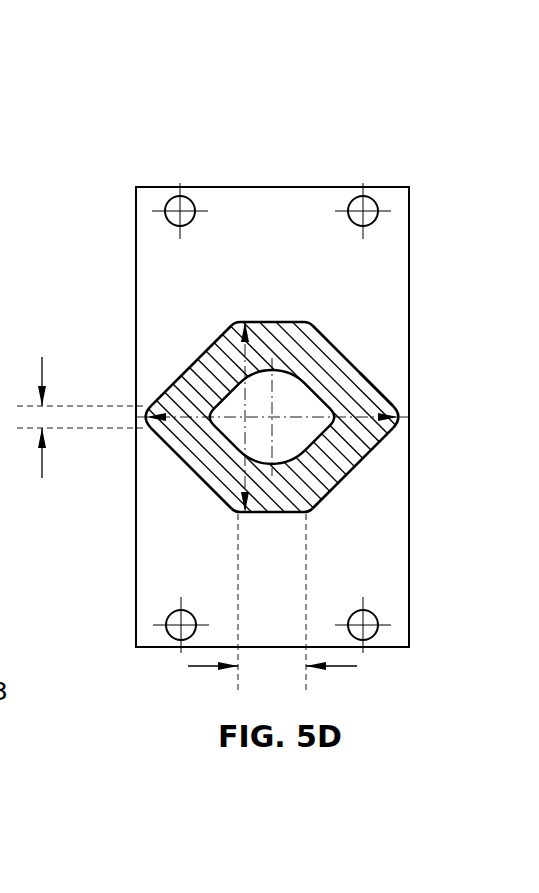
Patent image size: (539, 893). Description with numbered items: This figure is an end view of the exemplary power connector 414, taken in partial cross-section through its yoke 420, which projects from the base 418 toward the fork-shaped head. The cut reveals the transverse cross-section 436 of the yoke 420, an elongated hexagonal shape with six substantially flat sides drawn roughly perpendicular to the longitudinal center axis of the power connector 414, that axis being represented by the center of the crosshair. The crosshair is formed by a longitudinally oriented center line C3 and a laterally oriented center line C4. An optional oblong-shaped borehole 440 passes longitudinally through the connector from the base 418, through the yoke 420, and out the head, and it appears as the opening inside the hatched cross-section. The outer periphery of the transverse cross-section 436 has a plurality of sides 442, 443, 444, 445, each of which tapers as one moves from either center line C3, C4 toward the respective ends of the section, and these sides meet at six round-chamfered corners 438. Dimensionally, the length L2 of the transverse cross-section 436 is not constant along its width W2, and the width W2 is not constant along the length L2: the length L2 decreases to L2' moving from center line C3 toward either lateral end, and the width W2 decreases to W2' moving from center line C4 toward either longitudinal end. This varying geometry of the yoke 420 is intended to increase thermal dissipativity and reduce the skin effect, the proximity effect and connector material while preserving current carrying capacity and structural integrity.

The power connector 414 is at (160, 135).
The base 418 is at (136, 200).
The yoke 420 is at (175, 312).
The transverse cross-section 436 is at (312, 360).
The round-chamfered corners 438 is at (237, 320).
The oblong-shaped borehole 440 is at (352, 368).
The side 442 is at (167, 446).
The side 443 is at (175, 390).
The side 444 is at (376, 445).
The side 445 is at (378, 388).
The longitudinally oriented center line C3 is at (293, 418).
The laterally oriented center line C4 is at (275, 465).
The width W2 is at (266, 391).
The reduced width W2' is at (73, 390).
The length L2 is at (235, 368).
The reduced length L2' is at (241, 622).